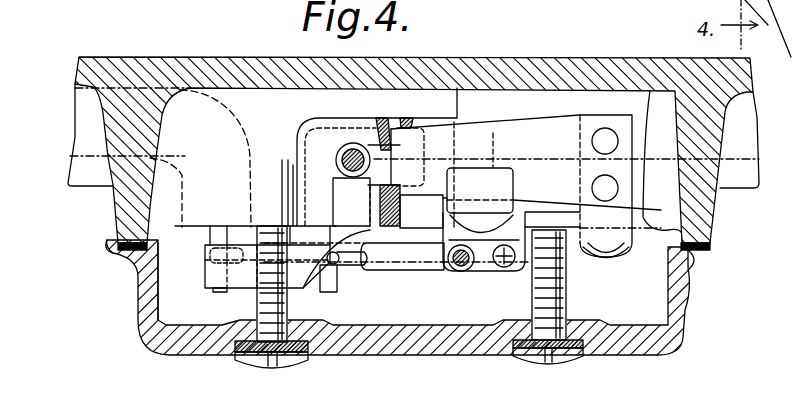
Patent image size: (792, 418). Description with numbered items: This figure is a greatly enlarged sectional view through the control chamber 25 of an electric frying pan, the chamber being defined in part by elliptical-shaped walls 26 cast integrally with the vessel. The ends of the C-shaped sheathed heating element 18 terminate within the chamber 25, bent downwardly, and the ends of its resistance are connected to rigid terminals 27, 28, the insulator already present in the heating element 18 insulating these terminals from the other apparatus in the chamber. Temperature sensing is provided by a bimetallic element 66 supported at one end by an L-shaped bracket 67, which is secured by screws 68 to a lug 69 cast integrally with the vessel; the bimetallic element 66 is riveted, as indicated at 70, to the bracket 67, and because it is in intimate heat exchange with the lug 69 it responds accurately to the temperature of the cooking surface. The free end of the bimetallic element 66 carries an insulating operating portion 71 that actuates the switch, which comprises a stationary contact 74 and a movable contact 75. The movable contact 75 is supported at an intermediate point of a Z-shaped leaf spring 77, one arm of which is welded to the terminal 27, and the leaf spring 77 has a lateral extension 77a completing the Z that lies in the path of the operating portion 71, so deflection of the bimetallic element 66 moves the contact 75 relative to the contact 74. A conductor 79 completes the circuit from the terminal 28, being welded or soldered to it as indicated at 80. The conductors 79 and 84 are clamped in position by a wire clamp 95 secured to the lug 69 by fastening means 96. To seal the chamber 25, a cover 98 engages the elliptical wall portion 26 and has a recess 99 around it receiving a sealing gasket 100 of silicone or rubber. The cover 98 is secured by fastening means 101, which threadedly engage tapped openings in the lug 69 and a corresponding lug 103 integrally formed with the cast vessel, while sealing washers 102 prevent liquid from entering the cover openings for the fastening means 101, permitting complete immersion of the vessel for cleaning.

The sheathed heating element 18 is at (250, 107).
The chamber 25 is at (360, 273).
The elliptical-shaped walls 26 is at (120, 213).
The rigid terminal 27 is at (215, 295).
The rigid terminal 28 is at (337, 280).
The bimetallic element 66 is at (530, 129).
The L-shaped bracket 67 is at (634, 246).
The screws 68 is at (601, 252).
The lug 69 is at (681, 232).
The rivets 70 is at (617, 145).
The insulating operating portion 71 is at (526, 164).
The stationary contact 74 is at (346, 151).
The movable contact 75 is at (345, 165).
The leaf spring 77 is at (350, 212).
The lateral extension 77a is at (398, 122).
The conductor 79 is at (423, 264).
The welded or soldered connection 80 is at (328, 292).
The conductor 84 is at (503, 268).
The wire clamp 95 is at (443, 230).
The fastening means 96 is at (483, 228).
The cover 98 is at (185, 350).
The recess 99 is at (125, 262).
The sealing gasket 100 is at (118, 240).
The fastening means 101 is at (285, 362).
The sealing washers 102 is at (238, 350).
The lug 103 is at (191, 230).